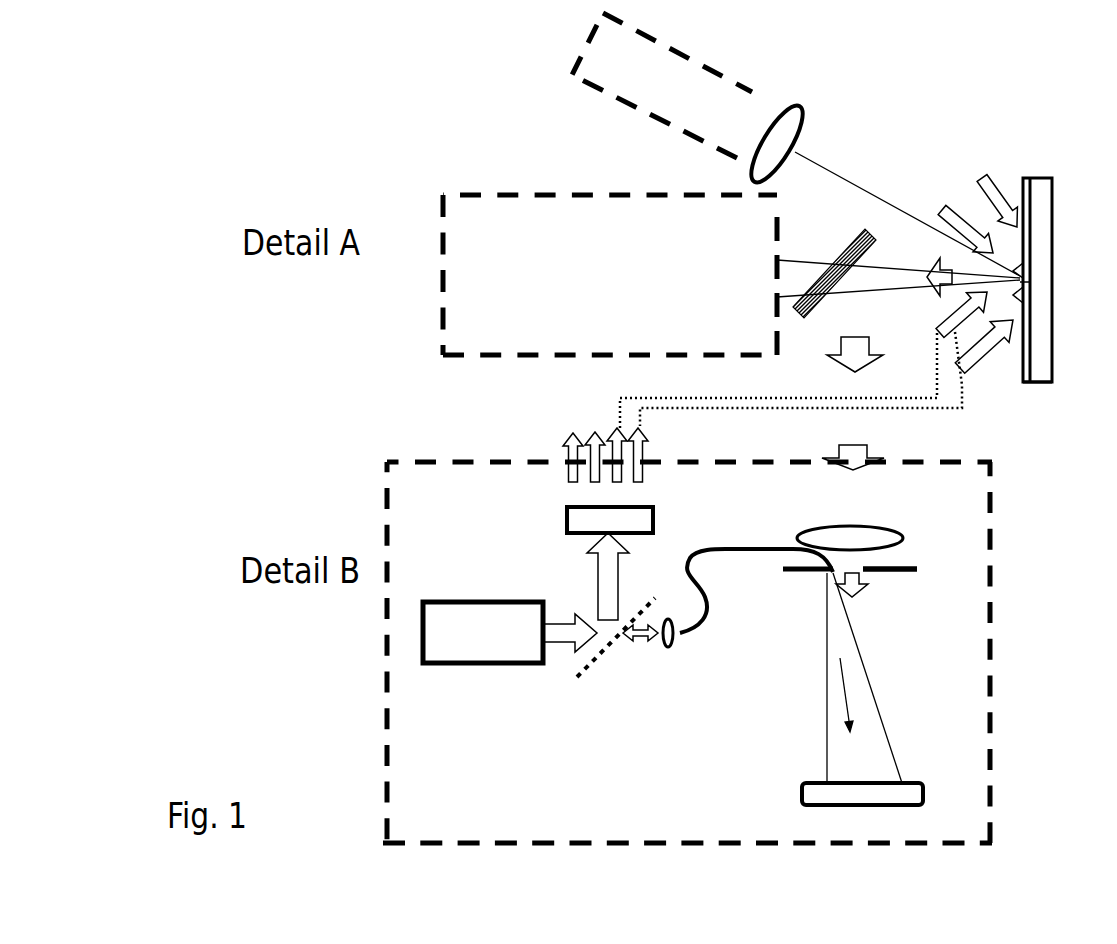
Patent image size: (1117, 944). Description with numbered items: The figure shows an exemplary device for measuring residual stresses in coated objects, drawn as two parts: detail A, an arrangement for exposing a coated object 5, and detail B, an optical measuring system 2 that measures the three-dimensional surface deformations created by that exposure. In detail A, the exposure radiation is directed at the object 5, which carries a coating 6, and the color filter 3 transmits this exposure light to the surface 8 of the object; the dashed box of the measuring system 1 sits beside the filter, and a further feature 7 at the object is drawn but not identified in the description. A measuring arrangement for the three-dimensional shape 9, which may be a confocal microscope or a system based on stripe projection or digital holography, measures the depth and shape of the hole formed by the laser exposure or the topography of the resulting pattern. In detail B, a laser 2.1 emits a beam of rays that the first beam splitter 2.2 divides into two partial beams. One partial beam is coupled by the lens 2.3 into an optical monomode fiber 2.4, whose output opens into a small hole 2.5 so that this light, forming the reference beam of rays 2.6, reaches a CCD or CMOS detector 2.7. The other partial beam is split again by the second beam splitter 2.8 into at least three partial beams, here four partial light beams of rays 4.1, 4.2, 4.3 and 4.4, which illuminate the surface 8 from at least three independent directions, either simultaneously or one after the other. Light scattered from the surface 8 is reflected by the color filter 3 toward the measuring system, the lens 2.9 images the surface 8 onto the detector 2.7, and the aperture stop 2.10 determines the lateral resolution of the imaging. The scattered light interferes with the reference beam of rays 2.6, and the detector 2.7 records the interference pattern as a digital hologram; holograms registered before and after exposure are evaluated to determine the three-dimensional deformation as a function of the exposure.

The measuring system 1 is at (560, 192).
The optical measuring system 2 is at (1000, 538).
The color filter 3 is at (860, 233).
The coated object 5 is at (1041, 178).
The coating 6 is at (1036, 382).
The surface 7 is at (1030, 282).
The surface 8 is at (1030, 266).
The measuring arrangement for the 3D shape 9 is at (747, 82).
The partial light beam of rays 4.1 is at (1000, 343).
The partial light beam of rays 4.2 is at (947, 333).
The partial light beam of rays 4.3 is at (948, 205).
The partial light beam of rays 4.4 is at (985, 185).
The laser 2.1 is at (485, 665).
The first beam splitter 2.2 is at (618, 645).
The lens 2.3 is at (668, 652).
The optical monomode fiber 2.4 is at (740, 553).
The small hole 2.5 is at (825, 573).
The reference beam of rays 2.6 is at (865, 738).
The CCD or CMOS detector 2.7 is at (867, 787).
The second beam splitter 2.8 is at (567, 510).
The lens 2.9 is at (893, 535).
The aperture stop 2.10 is at (900, 577).